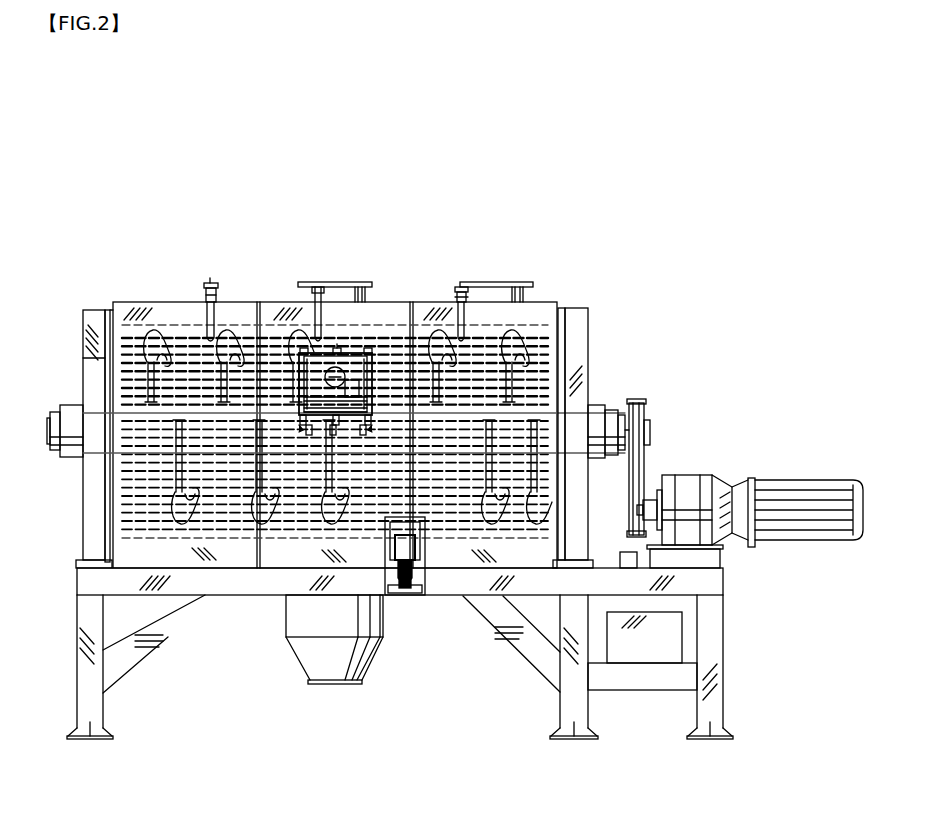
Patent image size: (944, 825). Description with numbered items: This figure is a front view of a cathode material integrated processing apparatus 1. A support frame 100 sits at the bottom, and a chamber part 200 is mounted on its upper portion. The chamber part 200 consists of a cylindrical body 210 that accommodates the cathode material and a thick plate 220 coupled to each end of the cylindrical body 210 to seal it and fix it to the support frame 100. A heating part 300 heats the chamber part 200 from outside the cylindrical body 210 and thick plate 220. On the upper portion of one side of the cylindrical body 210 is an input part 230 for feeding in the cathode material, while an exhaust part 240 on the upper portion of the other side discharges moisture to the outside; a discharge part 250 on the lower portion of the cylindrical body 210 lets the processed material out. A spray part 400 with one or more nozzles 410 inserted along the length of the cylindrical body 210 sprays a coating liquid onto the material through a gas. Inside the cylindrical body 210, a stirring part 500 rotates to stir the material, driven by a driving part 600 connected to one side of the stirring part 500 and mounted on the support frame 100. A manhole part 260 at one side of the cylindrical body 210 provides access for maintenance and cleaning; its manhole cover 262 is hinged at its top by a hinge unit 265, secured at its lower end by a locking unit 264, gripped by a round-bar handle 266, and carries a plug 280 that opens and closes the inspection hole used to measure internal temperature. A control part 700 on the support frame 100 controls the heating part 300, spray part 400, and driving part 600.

The cathode material integrated processing apparatus 1 is at (457, 98).
The support frame 100 is at (150, 651).
The chamber part 200 is at (165, 185).
The cylindrical body 210 is at (178, 300).
The thick plate 220 is at (88, 300).
The input part 230 is at (337, 280).
The exhaust part 240 is at (493, 282).
The discharge part 250 is at (332, 668).
The manhole part 260 is at (378, 347).
The manhole cover 262 is at (308, 387).
The locking unit 264 is at (390, 430).
The hinge unit 265 is at (335, 348).
The handle 266 is at (343, 438).
The plug 280 is at (333, 387).
The heating part 300 is at (547, 355).
The spray part 400 is at (216, 268).
The nozzle 410 is at (209, 274).
The stirring part 500 is at (605, 407).
The driving part 600 is at (693, 478).
The control part 700 is at (665, 640).